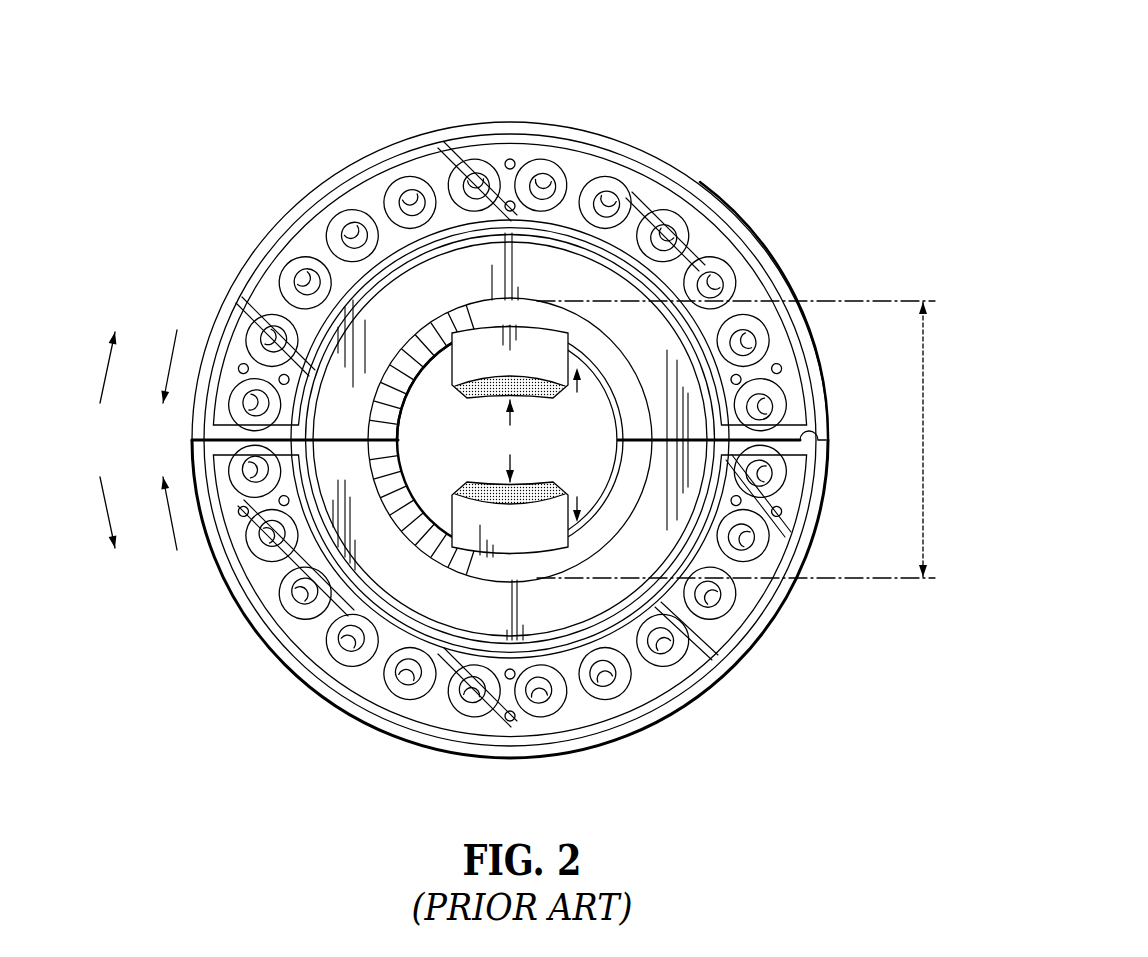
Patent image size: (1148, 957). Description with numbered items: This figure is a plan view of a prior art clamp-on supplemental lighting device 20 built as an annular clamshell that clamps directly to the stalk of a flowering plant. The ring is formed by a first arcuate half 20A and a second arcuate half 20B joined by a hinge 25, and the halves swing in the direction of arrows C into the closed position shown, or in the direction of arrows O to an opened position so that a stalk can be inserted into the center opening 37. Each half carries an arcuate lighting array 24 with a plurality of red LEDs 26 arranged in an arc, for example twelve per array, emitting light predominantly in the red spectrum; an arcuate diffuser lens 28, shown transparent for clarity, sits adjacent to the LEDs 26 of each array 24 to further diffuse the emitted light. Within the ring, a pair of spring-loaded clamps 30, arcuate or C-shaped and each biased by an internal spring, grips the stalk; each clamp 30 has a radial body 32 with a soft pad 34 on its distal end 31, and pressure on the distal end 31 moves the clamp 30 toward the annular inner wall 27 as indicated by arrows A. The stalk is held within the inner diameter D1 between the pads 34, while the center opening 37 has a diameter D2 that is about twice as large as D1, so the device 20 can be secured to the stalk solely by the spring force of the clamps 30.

The supplemental lighting device 20 is at (760, 65).
The first arcuate half 20A is at (688, 174).
The second arcuate half 20B is at (787, 600).
The arcuate lighting array 24 is at (579, 172).
The hinge 25 is at (840, 425).
The red LEDs 26 is at (476, 178).
The annular inner wall 27 is at (627, 405).
The arcuate diffuser lens 28 is at (650, 676).
The spring-loaded clamps 30 is at (527, 361).
The distal end 31 is at (542, 487).
The radial body 32 is at (443, 360).
The soft pad 34 is at (495, 395).
The center opening 37 is at (442, 500).
The inner diameter D1 is at (510, 441).
The diameter of center opening D2 is at (738, 439).
The arrows A is at (580, 385).
The arrows O is at (103, 368).
The arrows C is at (167, 368).